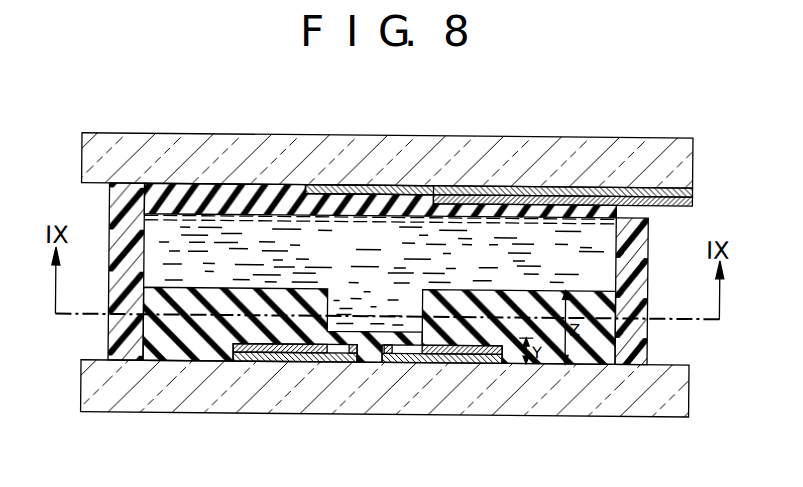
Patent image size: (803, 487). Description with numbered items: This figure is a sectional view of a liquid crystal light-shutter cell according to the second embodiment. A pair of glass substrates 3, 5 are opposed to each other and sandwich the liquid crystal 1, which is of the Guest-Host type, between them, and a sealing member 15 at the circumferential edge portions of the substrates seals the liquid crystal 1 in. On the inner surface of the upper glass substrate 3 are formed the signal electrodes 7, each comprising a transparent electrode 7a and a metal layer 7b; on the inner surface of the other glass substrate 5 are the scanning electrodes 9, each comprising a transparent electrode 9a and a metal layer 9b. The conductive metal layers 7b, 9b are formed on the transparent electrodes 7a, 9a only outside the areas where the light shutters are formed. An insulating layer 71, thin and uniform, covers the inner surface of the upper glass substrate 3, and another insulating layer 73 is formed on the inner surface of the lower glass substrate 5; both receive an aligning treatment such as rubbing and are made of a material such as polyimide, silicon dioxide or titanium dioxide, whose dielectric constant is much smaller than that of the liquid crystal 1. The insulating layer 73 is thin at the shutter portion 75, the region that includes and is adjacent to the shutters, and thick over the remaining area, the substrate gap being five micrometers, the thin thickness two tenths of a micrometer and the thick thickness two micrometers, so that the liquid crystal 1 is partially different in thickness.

The liquid crystal 1 is at (240, 238).
The glass substrate 3 is at (512, 145).
The glass substrate 5 is at (580, 400).
The signal electrode 7 is at (452, 189).
The transparent electrode 7a is at (393, 190).
The metal layer 7b is at (586, 200).
The scanning electrode 9 is at (343, 362).
The transparent electrode 9a is at (262, 352).
The metal layer 9b is at (352, 345).
The sealing member 15 is at (112, 285).
The insulating layer 71 is at (182, 198).
The insulating layer 73 is at (178, 352).
The shutter portion 75 is at (358, 267).